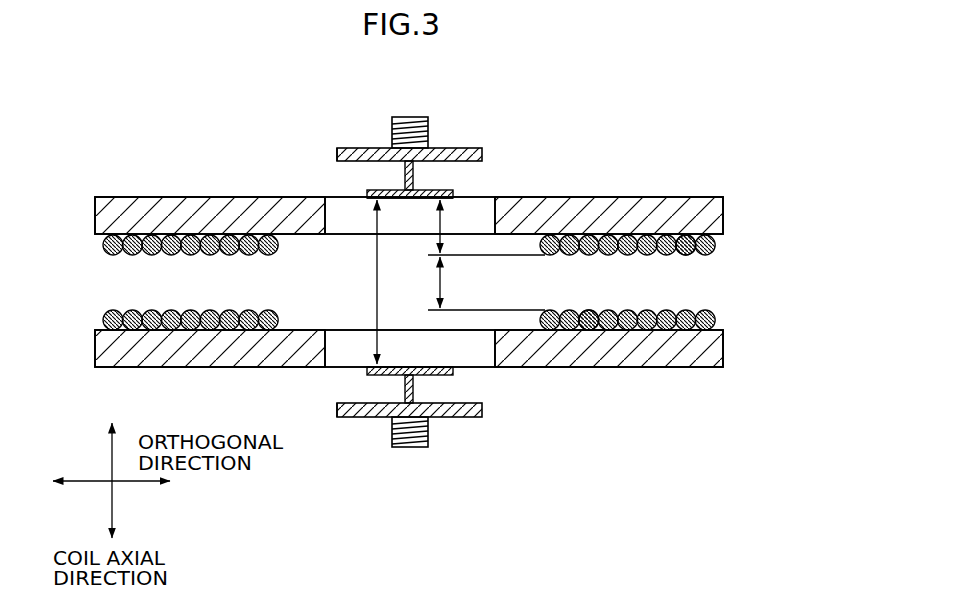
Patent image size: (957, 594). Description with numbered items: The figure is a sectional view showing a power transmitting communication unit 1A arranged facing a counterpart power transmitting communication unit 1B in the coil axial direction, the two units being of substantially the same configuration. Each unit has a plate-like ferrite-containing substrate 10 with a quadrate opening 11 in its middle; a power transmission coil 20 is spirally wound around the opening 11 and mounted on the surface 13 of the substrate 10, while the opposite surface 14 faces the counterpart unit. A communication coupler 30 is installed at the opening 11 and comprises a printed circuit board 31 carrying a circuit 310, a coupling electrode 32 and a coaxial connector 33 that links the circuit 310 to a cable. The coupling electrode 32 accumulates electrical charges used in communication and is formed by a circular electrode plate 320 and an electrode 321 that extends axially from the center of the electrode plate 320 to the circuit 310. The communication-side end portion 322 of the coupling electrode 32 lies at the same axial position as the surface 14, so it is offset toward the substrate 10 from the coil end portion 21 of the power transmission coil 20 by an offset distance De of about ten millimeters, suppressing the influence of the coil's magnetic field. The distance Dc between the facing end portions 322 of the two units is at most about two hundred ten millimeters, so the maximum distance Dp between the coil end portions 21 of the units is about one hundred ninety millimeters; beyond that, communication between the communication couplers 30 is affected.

The power transmitting communication unit 1A is at (583, 93).
The power transmitting communication unit 1B is at (583, 472).
The substrate 10 is at (410, 286).
The opening 11 is at (325, 235).
The surface of the substrate on the power transmission coil side 13 is at (410, 285).
The surface of the substrate opposite to the power transmission coil 14 is at (138, 197).
The power transmission coil 20 is at (200, 258).
The coil end portion 21 is at (587, 311).
The communication coupler 30 is at (402, 285).
The printed circuit board 31 is at (402, 286).
The circuit 310 is at (337, 154).
The coupling electrode 32 is at (394, 282).
The electrode plate 320 is at (367, 192).
The electrode 321 is at (413, 176).
The end portion of the coupling electrode on the communication side 322 is at (413, 200).
The coaxial connector 33 is at (410, 117).
The distance between the end portions of the coupling electrodes Dc is at (377, 293).
The offset distance De is at (440, 224).
The maximum distance between the units Dp is at (440, 285).